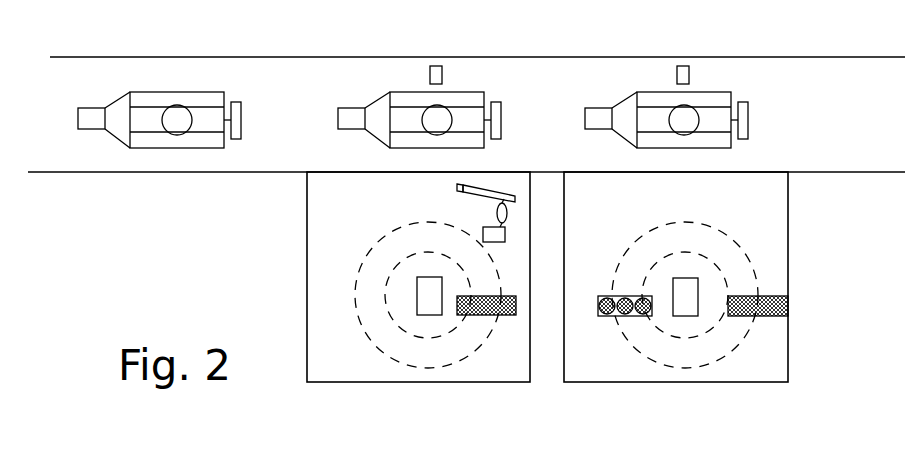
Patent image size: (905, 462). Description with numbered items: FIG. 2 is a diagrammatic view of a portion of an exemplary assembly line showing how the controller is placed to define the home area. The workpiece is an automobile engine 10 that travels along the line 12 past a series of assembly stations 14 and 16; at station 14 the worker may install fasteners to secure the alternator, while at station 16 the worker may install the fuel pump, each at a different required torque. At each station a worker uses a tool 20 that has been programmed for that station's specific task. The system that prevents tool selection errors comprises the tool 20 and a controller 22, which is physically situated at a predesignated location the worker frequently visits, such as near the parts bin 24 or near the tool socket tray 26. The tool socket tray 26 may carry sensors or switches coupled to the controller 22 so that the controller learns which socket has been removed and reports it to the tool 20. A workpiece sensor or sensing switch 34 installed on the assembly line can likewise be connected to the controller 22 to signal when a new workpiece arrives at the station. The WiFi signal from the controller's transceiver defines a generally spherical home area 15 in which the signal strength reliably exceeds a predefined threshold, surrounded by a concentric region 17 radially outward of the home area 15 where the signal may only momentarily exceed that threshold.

The engine 10 is at (130, 94).
The conveyor 12 is at (252, 68).
The assembly station 14 is at (318, 284).
The home area 15 is at (395, 268).
The assembly station 16 is at (755, 224).
The concentric region 17 is at (371, 345).
The tool 20 is at (470, 201).
The controller 22 is at (432, 314).
The parts bin 24 is at (483, 305).
The tool socket tray 26 is at (618, 317).
The workpiece sensor 34 is at (430, 64).